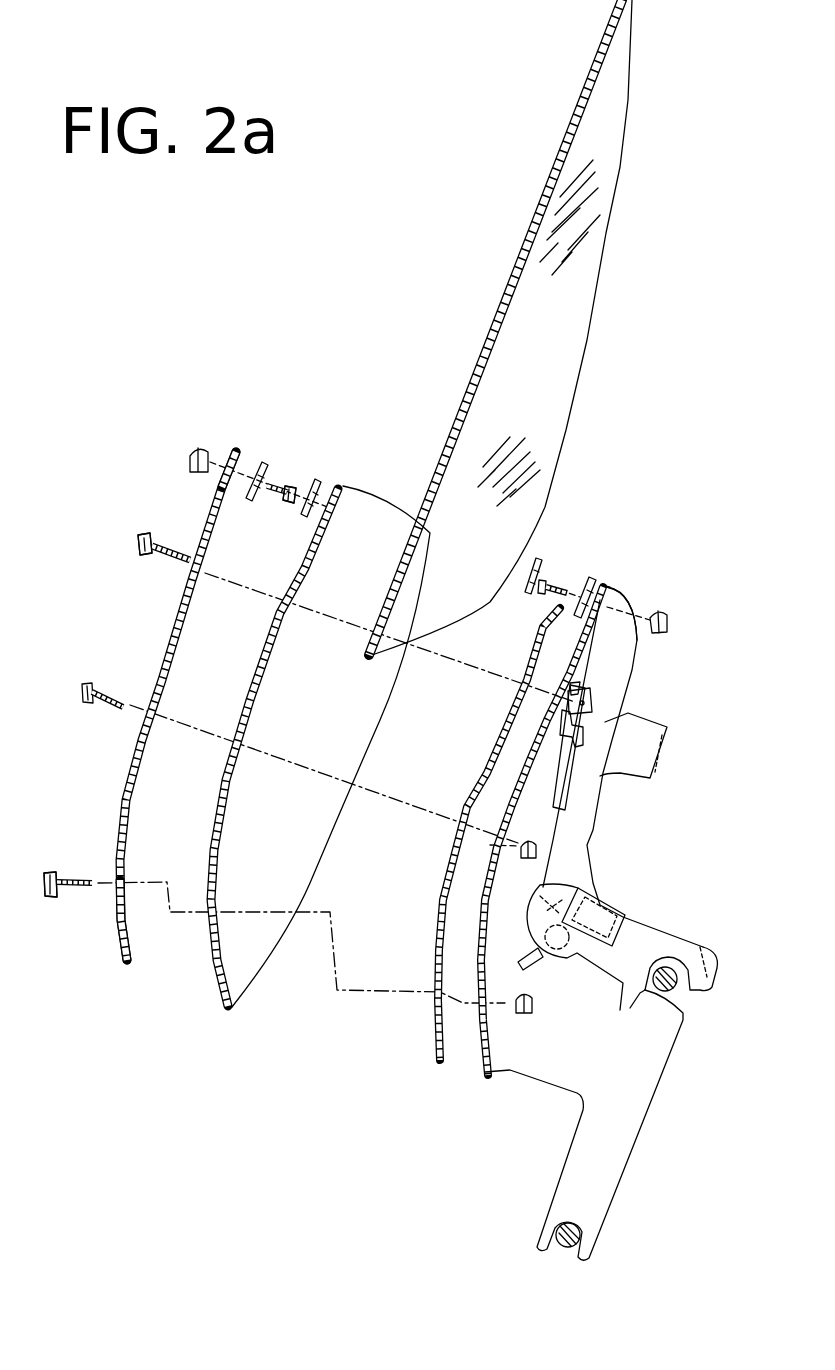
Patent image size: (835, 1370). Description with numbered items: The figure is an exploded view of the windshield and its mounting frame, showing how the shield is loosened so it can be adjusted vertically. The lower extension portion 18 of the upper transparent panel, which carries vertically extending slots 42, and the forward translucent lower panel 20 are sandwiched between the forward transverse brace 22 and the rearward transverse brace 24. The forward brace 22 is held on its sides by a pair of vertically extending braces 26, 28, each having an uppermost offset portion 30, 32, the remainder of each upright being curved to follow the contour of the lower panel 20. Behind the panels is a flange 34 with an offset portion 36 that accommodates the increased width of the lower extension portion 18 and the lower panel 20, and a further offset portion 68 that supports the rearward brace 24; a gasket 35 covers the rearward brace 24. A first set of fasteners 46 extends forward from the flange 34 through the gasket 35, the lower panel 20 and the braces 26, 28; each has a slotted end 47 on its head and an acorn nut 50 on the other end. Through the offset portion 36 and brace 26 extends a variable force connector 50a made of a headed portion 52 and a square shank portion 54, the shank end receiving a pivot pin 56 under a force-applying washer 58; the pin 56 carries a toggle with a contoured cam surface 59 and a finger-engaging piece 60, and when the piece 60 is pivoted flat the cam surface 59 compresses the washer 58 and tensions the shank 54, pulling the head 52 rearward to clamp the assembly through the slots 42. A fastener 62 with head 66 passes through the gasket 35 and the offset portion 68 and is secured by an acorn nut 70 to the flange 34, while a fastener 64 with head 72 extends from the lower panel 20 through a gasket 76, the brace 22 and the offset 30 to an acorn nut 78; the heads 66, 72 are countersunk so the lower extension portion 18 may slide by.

The lower extension portion 18 is at (380, 636).
The lower panel 20 is at (210, 940).
The forward transverse brace 22 is at (262, 460).
The rearward transverse brace 24 is at (596, 583).
The vertically extending brace 26 is at (117, 928).
The vertically extending brace 28 is at (167, 637).
The uppermost offset portion 30 is at (234, 453).
The uppermost offset portion 32 is at (618, 595).
The flange 34 is at (483, 1072).
The gasket 35 is at (535, 560).
The offset portion 36 is at (517, 803).
The vertically extending slots 42 is at (420, 522).
The fasteners 46 is at (115, 708).
The slotted end 47 is at (50, 875).
The acorn nut 50 is at (535, 1003).
The variable force connector 50a is at (159, 565).
The headed portion 52 is at (142, 535).
The square shank portion 54 is at (175, 548).
The pivot pin 56 is at (592, 703).
The force-applying washer 58 is at (575, 687).
The contoured cam surface 59 is at (568, 715).
The finger-engaging piece 60 is at (563, 783).
The fastener 62 is at (560, 572).
The fastener 64 is at (278, 484).
The head 66 is at (548, 577).
The offset portion 68 is at (608, 585).
The acorn nut 70 is at (665, 620).
The head 72 is at (287, 502).
The gasket 76 is at (318, 482).
The acorn nut 78 is at (196, 450).